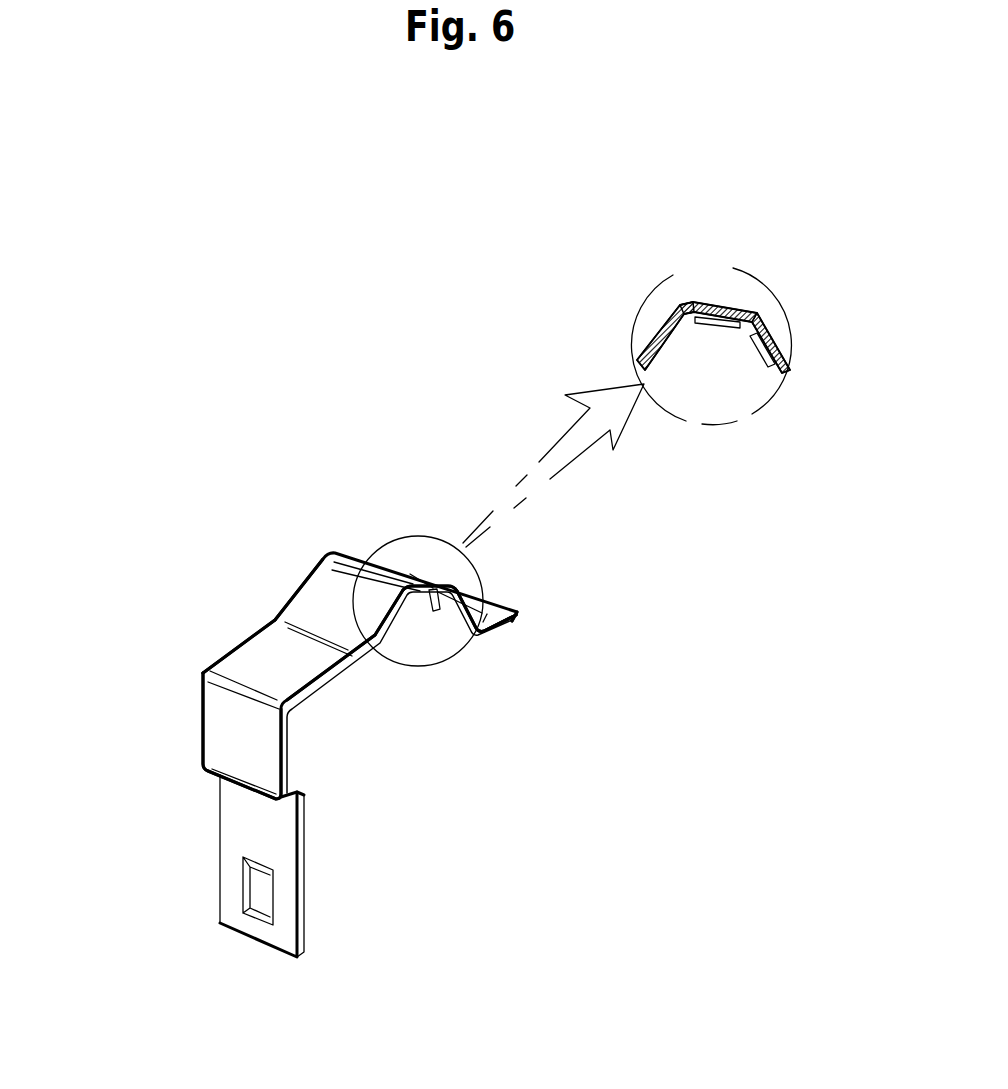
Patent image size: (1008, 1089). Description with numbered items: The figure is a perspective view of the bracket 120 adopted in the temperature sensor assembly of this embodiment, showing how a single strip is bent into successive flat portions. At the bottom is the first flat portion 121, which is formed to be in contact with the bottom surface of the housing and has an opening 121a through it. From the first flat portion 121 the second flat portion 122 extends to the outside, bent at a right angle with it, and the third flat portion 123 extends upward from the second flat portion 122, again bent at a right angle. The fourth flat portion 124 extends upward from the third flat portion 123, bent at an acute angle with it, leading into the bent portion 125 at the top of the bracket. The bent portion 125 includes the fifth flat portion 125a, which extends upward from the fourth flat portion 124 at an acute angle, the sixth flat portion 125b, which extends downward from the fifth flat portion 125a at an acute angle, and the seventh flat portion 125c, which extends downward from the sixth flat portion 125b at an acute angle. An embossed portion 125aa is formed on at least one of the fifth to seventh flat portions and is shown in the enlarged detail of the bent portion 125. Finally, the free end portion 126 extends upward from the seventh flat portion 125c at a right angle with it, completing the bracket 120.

The bracket 120 is at (185, 612).
The first flat portion 121 is at (290, 903).
The opening 121a is at (252, 892).
The second flat portion 122 is at (297, 790).
The third flat portion 123 is at (217, 747).
The fourth flat portion 124 is at (322, 692).
The bent portion 125 is at (850, 260).
The fifth flat portion 125a is at (381, 636).
The sixth flat portion 125b is at (437, 591).
The seventh flat portion 125c is at (490, 611).
The embossed portion 125aa is at (717, 325).
The free end portion 126 is at (511, 620).